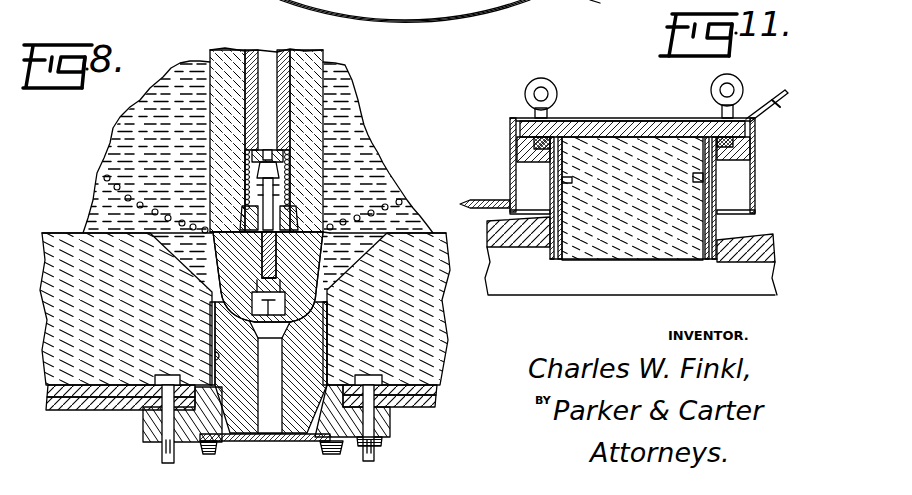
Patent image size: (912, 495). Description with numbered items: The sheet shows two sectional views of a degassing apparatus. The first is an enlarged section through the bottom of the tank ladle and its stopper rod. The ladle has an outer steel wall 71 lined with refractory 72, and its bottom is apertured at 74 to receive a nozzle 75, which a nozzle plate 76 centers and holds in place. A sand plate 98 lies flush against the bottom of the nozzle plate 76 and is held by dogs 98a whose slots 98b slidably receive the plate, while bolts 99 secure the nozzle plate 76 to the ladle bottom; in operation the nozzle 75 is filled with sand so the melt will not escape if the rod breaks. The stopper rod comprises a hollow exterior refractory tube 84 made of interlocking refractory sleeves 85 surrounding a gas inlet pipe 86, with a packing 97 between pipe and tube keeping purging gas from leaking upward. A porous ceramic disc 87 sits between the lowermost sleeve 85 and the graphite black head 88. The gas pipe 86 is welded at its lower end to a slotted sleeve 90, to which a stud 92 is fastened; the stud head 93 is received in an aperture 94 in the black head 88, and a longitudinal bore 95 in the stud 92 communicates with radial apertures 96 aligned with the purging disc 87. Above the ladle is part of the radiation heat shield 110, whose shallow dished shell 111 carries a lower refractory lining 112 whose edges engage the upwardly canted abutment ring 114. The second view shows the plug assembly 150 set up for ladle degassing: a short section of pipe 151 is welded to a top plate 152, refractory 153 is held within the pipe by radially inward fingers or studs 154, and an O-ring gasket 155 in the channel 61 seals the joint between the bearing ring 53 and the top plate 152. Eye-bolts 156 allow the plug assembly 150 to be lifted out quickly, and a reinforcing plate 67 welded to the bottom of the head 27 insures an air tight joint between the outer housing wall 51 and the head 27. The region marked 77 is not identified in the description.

In FIG. 8, the refractory sections or sleeves 85 is at (211, 50).
In FIG. 8, the gas inlet pipe 86 is at (260, 50).
In FIG. 8, the hollow exterior refractory tube 84 is at (325, 61).
In FIG. 8, the refractory mound 77 is at (332, 111).
In FIG. 8, the sleeve 90 is at (281, 165).
In FIG. 8, the longitudinal bore 95 is at (274, 194).
In FIG. 8, the radial apertures 96 is at (278, 227).
In FIG. 8, the packing 97 is at (247, 173).
In FIG. 8, the ceramic disc 87 is at (325, 238).
In FIG. 8, the stud 92 is at (262, 268).
In FIG. 8, the head 93 is at (290, 296).
In FIG. 8, the aperture 94 is at (257, 328).
In FIG. 8, the aperture 74 is at (212, 353).
In FIG. 8, the nozzle plug or black head 88 is at (269, 338).
In FIG. 8, the refractory 72 is at (450, 362).
In FIG. 8, the outer steel wall 71 is at (450, 402).
In FIG. 8, the nozzle plate 76 is at (390, 420).
In FIG. 8, the bolts 99 is at (374, 455).
In FIG. 8, the sand plate 98 is at (256, 442).
In FIG. 8, the nozzle 75 is at (254, 442).
In FIG. 8, the slots 98b is at (165, 430).
In FIG. 8, the dogs 98a is at (205, 448).
In FIG. 11, the radiation heat shield 110 is at (597, 0).
In FIG. 11, the abutment ring 114 is at (480, 0).
In FIG. 11, the plug assembly 150 is at (577, 110).
In FIG. 11, the top plate 152 is at (598, 130).
In FIG. 11, the eye-bolts 156 is at (525, 90).
In FIG. 11, the O-ring gasket 155 is at (532, 150).
In FIG. 11, the pipe 151 is at (559, 262).
In FIG. 11, the refractory 153 is at (643, 240).
In FIG. 11, the fingers or studs 154 is at (692, 173).
In FIG. 11, the bearing ring 53 is at (748, 153).
In FIG. 11, the channel 61 is at (729, 141).
In FIG. 11, the reinforcing plate 67 is at (773, 111).
In FIG. 11, the outer housing wall 51 is at (753, 184).
In FIG. 11, the head 27 is at (478, 201).
In FIG. 11, the refractory lining 112 is at (513, 240).
In FIG. 11, the shell 111 is at (752, 240).